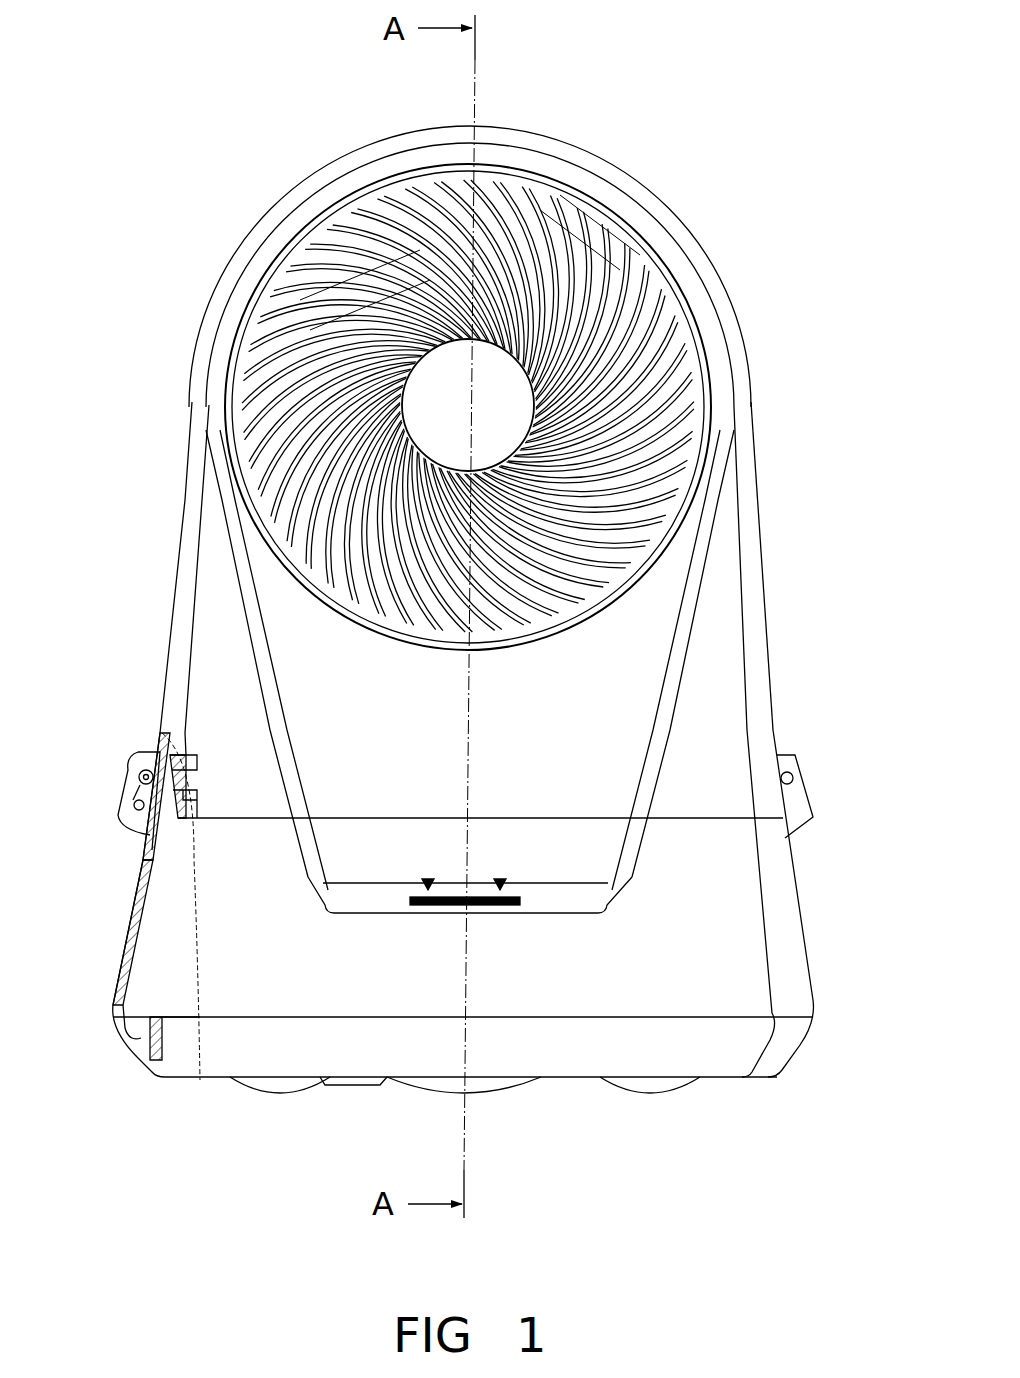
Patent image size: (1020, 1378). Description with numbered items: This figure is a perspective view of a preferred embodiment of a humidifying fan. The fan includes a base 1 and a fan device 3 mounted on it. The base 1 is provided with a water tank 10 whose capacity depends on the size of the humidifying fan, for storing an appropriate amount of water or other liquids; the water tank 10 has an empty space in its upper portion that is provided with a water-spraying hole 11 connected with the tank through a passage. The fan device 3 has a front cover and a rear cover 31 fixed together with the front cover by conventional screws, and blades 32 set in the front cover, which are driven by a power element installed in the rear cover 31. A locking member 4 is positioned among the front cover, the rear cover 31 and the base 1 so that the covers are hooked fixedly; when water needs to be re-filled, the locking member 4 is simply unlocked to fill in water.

The base 1 is at (463, 812).
The fan device 3 is at (446, 266).
The locking member 4 is at (470, 766).
The water tank 10 is at (562, 992).
The water-spraying hole 11 is at (380, 650).
The rear cover 31 is at (333, 163).
The blades 32 is at (680, 409).